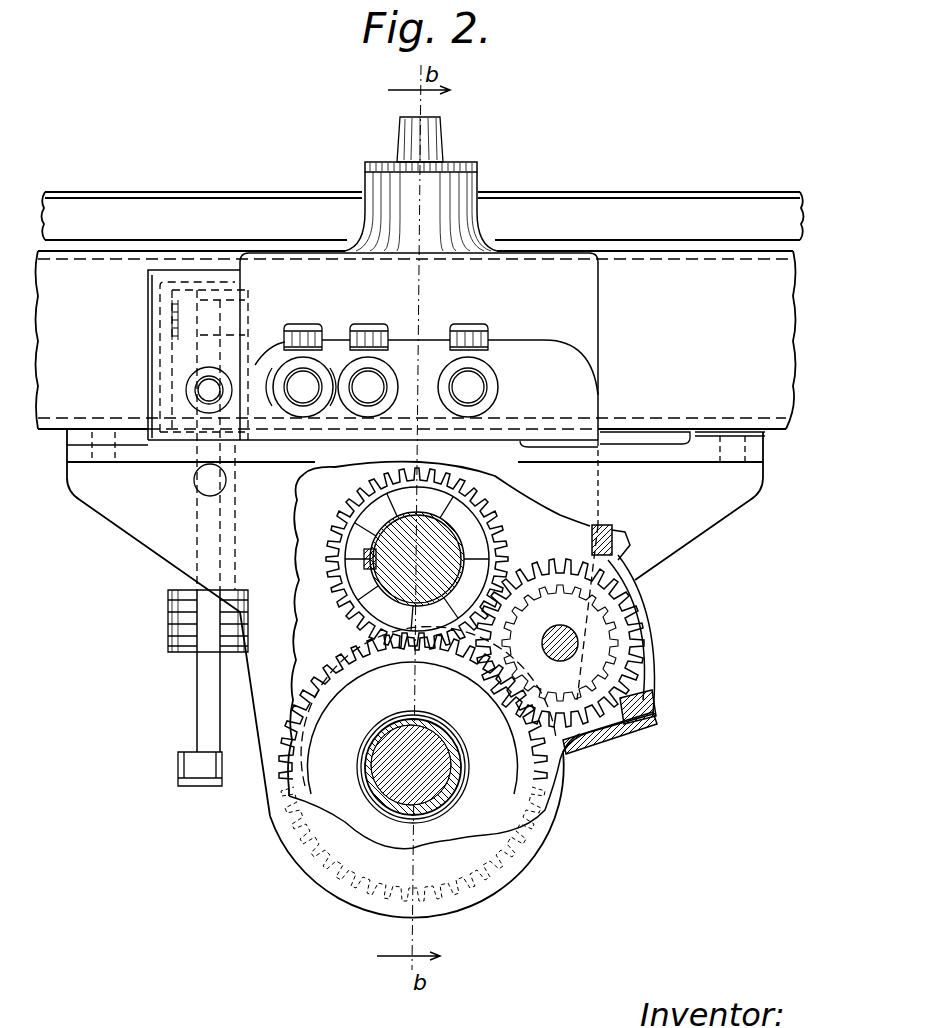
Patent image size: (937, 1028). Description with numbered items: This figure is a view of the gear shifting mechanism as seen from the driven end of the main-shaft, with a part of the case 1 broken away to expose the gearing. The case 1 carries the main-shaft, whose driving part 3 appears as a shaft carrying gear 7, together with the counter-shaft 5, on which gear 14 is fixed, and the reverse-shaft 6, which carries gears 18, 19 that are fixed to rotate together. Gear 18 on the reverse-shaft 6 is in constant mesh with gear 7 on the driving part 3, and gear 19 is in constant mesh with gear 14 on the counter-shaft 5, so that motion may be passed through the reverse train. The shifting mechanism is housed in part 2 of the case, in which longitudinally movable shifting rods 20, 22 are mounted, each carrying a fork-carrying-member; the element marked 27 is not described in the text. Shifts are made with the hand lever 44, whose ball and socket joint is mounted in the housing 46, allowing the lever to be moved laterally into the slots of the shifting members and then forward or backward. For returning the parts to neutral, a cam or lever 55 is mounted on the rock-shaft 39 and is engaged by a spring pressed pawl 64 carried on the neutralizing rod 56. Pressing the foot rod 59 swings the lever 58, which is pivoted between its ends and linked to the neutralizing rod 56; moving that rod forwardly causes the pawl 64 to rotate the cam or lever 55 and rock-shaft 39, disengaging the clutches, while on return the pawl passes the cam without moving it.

The case 1 is at (416, 623).
The part of the case 2 is at (426, 357).
The driving part of the main-shaft 3 is at (422, 559).
The counter-shaft 5 is at (413, 767).
The reverse-shaft 6 is at (544, 641).
The gear 7 is at (422, 559).
The gear 14 is at (413, 767).
The gear 18 is at (560, 630).
The gear 19 is at (559, 660).
The shifting rod 20 is at (468, 370).
The shifting rod 22 is at (303, 370).
The adjusting knob 27 is at (368, 370).
The rock-shaft 39 is at (160, 318).
The hand lever 44 is at (443, 140).
The housing 46 is at (462, 186).
The cam or lever 55 is at (160, 352).
The neutralizing rod 56 is at (215, 387).
The lever 58 is at (200, 682).
The rod 59 is at (185, 768).
The spring pressed pawl 64 is at (186, 390).